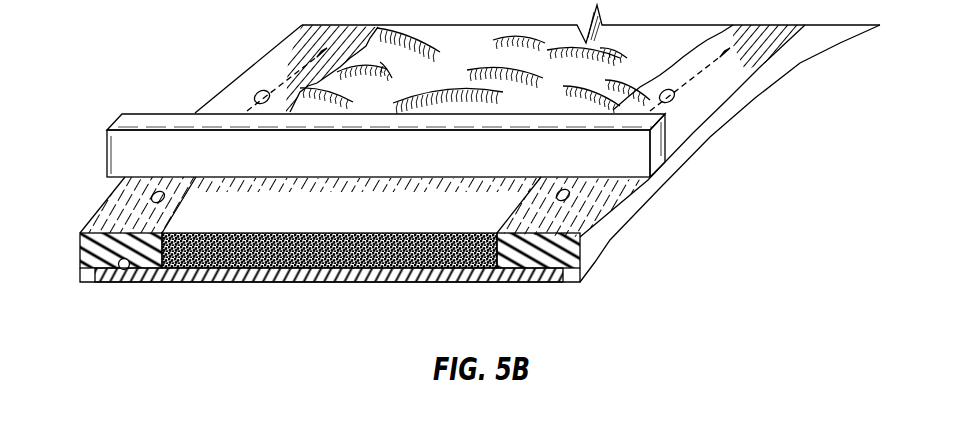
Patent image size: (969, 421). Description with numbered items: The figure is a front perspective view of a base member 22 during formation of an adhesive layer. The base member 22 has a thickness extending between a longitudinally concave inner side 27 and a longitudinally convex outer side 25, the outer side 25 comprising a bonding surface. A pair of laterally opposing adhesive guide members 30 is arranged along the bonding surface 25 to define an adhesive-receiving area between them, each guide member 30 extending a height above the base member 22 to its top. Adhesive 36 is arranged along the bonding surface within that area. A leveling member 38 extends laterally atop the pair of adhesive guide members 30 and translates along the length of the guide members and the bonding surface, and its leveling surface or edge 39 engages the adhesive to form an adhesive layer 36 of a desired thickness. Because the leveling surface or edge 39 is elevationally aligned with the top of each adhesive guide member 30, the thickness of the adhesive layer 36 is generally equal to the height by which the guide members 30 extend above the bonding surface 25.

The adhesive guide member 30 is at (238, 103).
The leveling member 38 is at (107, 152).
The leveling surface or edge 39 is at (313, 178).
The adhesive layer 36 is at (247, 255).
The longitudinally convex outer side 25 is at (123, 270).
The base member 22 is at (486, 283).
The longitudinally concave inner side 27 is at (107, 283).